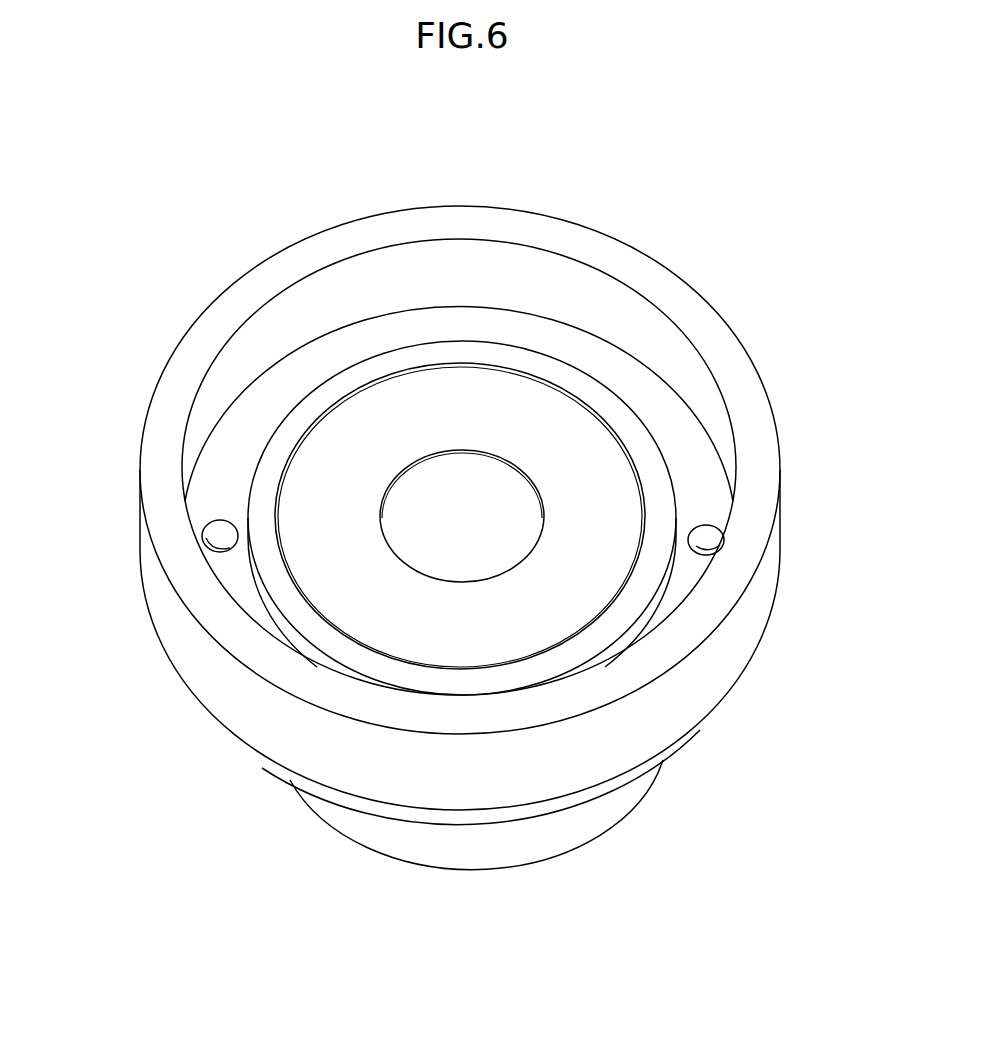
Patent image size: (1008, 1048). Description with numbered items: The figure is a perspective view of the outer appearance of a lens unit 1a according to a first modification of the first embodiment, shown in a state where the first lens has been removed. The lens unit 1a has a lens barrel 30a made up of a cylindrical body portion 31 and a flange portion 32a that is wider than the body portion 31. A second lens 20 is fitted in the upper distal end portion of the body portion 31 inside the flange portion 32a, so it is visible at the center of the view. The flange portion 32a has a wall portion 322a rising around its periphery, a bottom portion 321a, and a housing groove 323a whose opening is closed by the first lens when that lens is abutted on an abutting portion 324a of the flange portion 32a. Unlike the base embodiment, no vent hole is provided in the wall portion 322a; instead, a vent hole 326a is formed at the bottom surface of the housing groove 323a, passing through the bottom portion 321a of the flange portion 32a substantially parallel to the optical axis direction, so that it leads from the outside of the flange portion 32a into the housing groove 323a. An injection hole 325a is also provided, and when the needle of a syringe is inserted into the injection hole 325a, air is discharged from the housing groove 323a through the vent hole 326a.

The lens unit 1a is at (693, 172).
The lens barrel 30a is at (168, 330).
The flange portion 32a is at (142, 449).
The wall portion 322a is at (148, 592).
The bottom portion 321a is at (272, 770).
The body portion 31 is at (345, 822).
The housing groove 323a is at (295, 385).
The abutting portion 324a is at (394, 360).
The second lens 20 is at (543, 425).
The injection hole 325a is at (212, 540).
The vent hole 326a is at (714, 540).